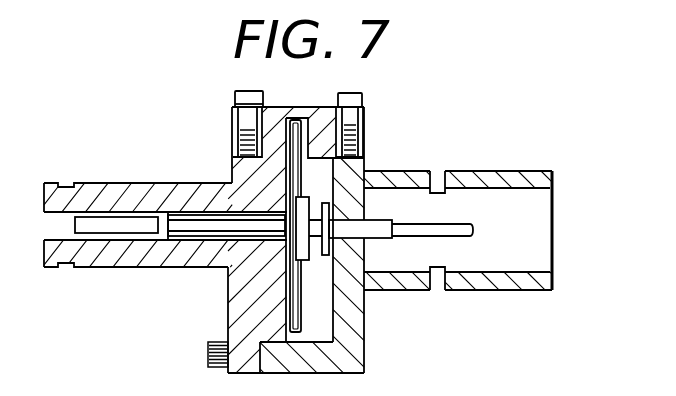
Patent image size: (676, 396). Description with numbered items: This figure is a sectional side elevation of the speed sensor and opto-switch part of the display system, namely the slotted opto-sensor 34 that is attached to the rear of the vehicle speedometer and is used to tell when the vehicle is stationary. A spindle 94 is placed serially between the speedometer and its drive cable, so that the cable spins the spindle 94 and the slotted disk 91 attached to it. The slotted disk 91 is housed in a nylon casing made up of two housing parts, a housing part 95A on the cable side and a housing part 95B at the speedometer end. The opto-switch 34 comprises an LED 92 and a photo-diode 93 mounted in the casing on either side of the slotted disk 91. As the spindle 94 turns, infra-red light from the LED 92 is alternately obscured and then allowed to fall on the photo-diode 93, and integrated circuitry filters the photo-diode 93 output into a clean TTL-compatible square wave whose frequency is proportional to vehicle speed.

The slotted opto-sensor 34 is at (370, 103).
The slotted disk 91 is at (290, 184).
The LED 92 is at (355, 137).
The photo-diode 93 is at (273, 130).
The spindle 94 is at (162, 238).
The housing part 95A is at (245, 301).
The housing part 95B is at (350, 320).